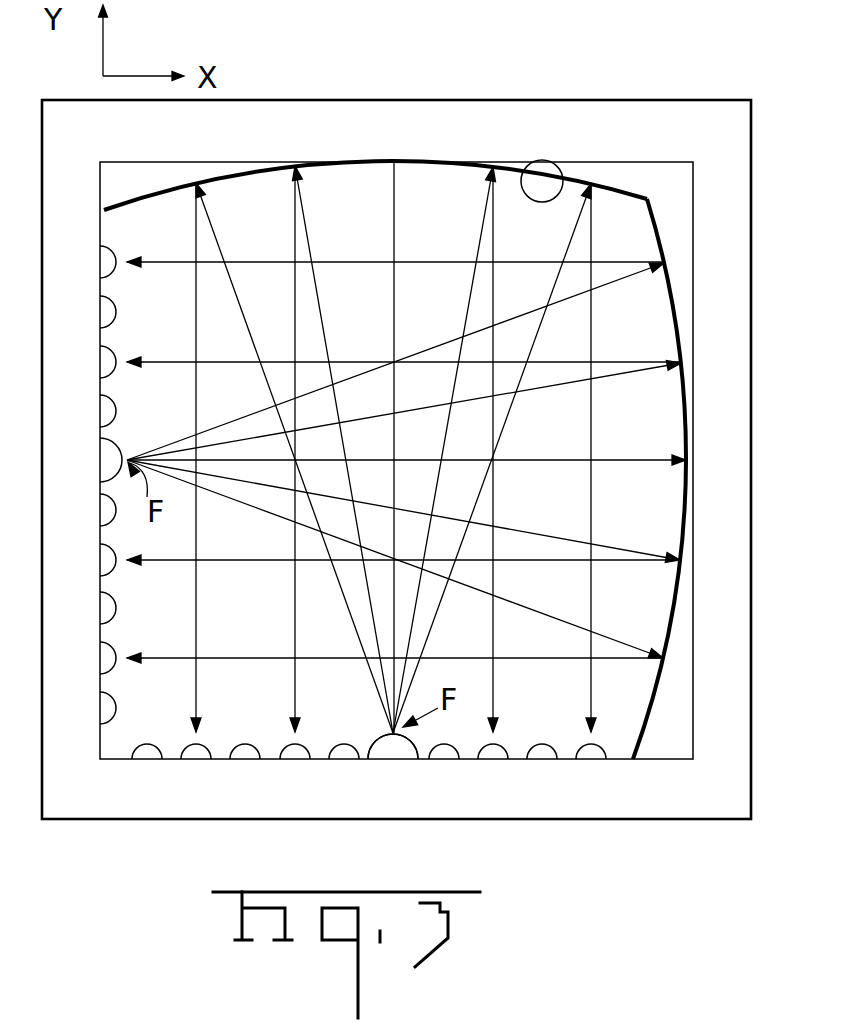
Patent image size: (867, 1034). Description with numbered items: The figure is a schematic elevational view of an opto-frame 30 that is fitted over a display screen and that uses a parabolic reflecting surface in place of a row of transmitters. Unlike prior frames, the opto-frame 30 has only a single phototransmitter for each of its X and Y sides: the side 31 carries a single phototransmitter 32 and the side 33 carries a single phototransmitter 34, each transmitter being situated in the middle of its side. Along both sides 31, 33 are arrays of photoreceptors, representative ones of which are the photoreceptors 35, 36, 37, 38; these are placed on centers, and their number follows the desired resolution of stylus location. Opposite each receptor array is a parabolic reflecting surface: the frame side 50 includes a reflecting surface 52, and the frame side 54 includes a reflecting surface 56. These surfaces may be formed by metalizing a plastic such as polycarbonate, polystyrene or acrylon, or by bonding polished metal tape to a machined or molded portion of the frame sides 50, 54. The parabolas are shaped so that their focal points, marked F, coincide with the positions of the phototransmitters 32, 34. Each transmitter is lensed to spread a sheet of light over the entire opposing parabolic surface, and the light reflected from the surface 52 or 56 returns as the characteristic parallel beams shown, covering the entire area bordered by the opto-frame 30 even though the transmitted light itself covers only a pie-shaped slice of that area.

The opto-frame 30 is at (563, 85).
The frame side 31 is at (368, 757).
The phototransmitter 32 is at (400, 752).
The frame side 33 is at (97, 538).
The phototransmitter 34 is at (103, 452).
The photoreceptor 35 is at (290, 757).
The photoreceptor 36 is at (197, 758).
The photoreceptor 37 is at (103, 560).
The photoreceptor 38 is at (103, 658).
The frame side 50 is at (612, 162).
The reflecting surface 52 is at (544, 159).
The frame side 54 is at (693, 308).
The reflecting surface 56 is at (685, 420).